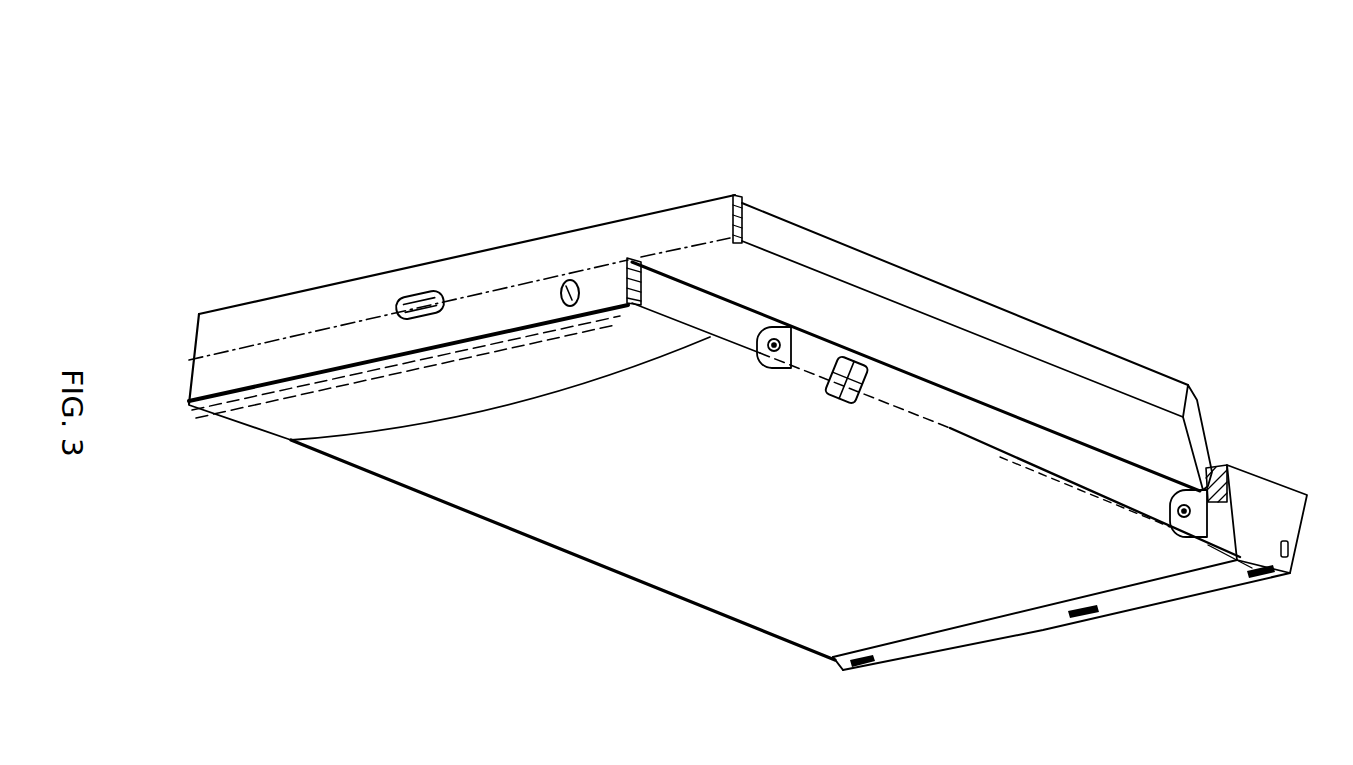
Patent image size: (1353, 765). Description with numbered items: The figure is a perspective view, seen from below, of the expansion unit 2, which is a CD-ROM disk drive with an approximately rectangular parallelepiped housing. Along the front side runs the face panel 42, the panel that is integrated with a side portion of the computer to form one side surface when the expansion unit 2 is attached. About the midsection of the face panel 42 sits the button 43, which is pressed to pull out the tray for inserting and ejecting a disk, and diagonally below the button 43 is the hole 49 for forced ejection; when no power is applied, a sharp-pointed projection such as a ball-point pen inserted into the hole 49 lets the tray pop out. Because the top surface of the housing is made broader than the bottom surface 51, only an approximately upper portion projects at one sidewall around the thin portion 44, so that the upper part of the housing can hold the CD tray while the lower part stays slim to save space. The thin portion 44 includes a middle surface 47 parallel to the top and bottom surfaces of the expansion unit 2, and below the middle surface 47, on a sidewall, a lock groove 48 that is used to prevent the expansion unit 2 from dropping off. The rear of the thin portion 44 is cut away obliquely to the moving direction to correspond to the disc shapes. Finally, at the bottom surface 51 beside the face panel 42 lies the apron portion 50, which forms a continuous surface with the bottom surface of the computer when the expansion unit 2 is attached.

The expansion unit 2 is at (1250, 379).
The face panel 42 is at (483, 283).
The button 43 is at (425, 292).
The thin portion 44 is at (908, 293).
The middle surface 47 is at (993, 368).
The lock groove 48 is at (849, 362).
The hole 49 is at (568, 280).
The apron portion 50 is at (461, 383).
The bottom surface 51 is at (697, 562).